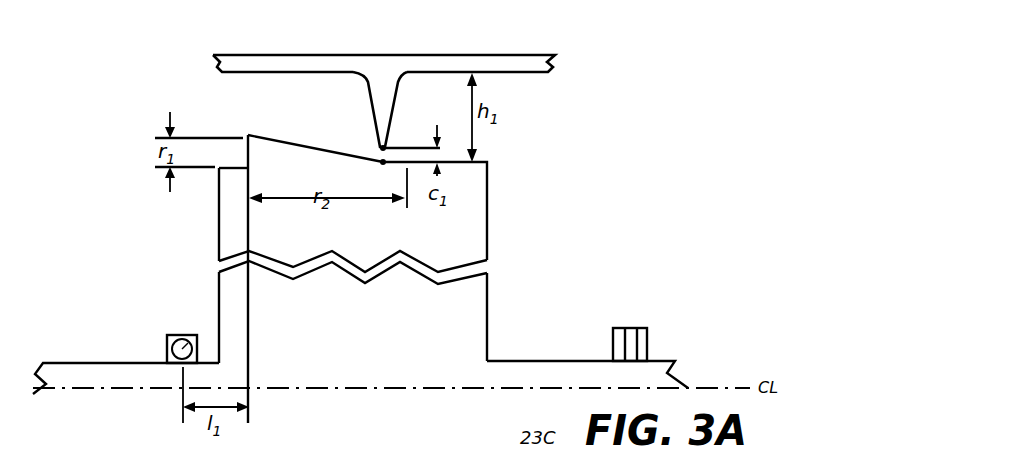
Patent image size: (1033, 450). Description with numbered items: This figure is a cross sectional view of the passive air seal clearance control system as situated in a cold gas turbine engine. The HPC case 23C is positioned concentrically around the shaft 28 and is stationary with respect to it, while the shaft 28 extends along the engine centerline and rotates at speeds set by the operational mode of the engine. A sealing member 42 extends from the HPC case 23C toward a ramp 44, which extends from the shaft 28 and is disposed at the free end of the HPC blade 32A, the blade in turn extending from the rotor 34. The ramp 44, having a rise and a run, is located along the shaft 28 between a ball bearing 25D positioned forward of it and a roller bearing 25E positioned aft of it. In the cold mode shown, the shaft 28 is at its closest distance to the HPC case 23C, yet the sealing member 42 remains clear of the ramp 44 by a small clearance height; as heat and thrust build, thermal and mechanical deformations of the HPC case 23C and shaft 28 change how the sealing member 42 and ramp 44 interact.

The HPC case 23C is at (505, 62).
The sealing member 42 is at (376, 93).
The ramp 44 is at (283, 173).
The HPC blade 32A is at (307, 246).
The rotor 34 is at (371, 338).
The bearing 25D is at (173, 342).
The bearing 25E is at (647, 341).
The shaft 28 is at (470, 375).